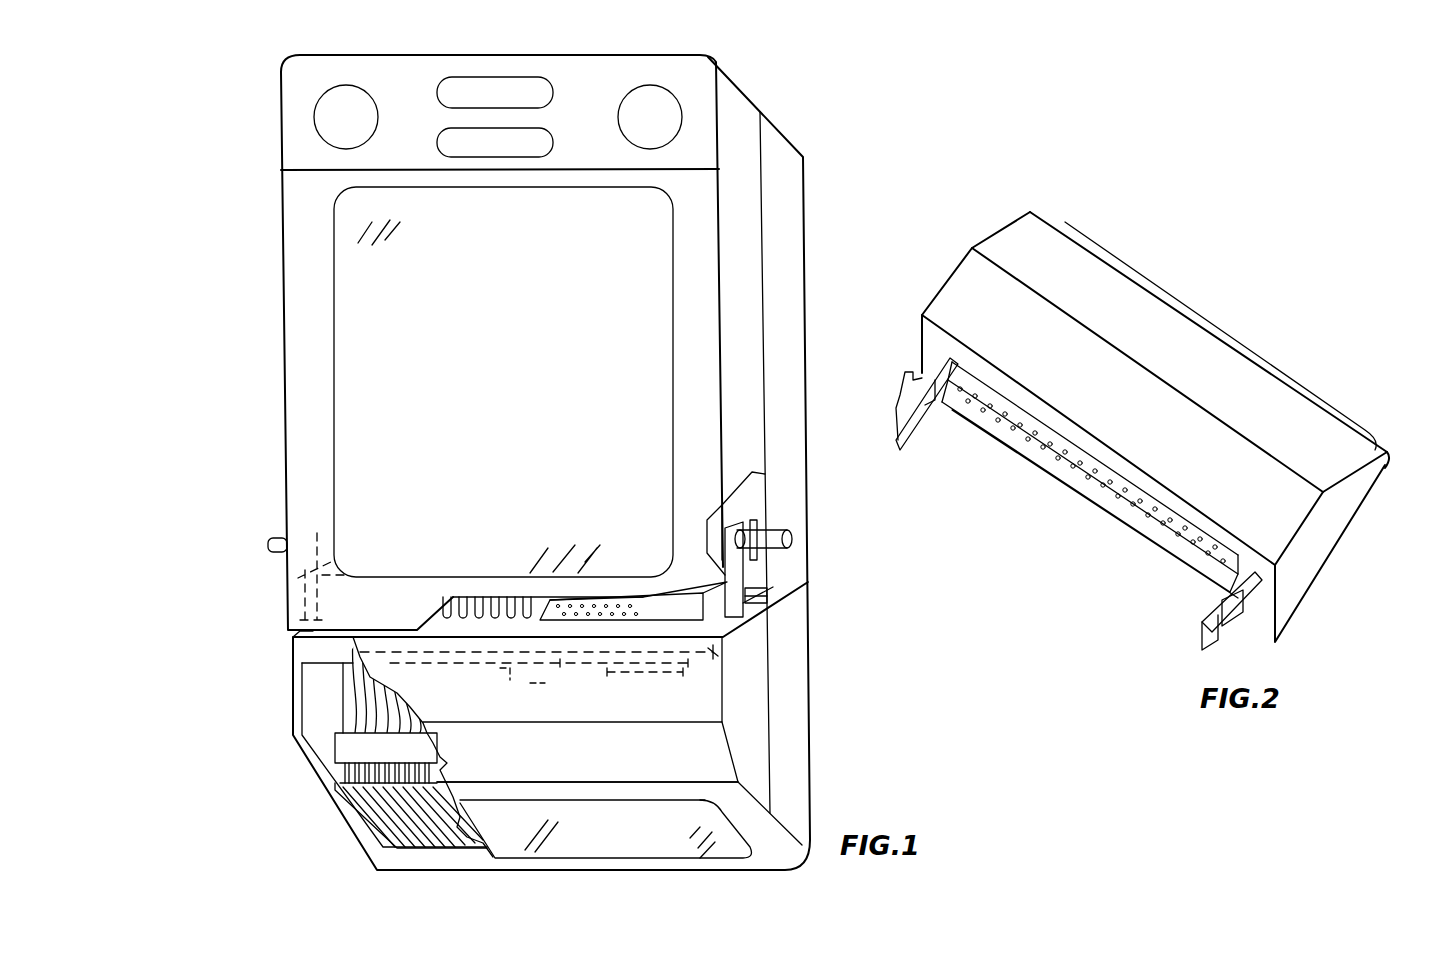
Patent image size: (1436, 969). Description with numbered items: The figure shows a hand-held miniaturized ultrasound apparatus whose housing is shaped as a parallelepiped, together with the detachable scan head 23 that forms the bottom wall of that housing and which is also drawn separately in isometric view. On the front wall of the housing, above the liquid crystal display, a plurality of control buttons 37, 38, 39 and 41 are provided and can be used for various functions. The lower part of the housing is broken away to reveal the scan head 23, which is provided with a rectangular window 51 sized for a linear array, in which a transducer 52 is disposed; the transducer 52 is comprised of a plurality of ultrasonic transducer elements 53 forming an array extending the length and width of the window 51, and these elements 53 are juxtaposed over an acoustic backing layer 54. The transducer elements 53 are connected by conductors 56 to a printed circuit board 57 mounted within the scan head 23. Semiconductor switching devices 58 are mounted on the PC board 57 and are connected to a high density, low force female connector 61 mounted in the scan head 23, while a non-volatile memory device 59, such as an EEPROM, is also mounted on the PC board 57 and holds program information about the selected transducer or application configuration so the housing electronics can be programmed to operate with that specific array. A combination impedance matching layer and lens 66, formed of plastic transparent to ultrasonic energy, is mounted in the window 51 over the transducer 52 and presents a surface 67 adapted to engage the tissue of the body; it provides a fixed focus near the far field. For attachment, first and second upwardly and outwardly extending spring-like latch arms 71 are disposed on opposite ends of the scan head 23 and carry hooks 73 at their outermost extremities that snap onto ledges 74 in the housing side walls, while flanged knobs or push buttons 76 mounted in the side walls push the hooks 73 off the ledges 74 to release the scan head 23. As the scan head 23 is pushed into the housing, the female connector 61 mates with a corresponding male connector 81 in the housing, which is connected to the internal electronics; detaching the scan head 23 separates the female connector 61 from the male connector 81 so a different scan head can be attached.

In FIG. 1, the detachable scan head 23 is at (258, 751).
In FIG. 1, the control button 37 is at (357, 108).
In FIG. 1, the control button 38 is at (673, 118).
In FIG. 1, the control button 39 is at (545, 142).
In FIG. 1, the control button 41 is at (533, 92).
In FIG. 1, the rectangular window 51 is at (673, 807).
In FIG. 1, the transducer 52 is at (325, 773).
In FIG. 1, the ultrasonic transducer elements 53 is at (373, 803).
In FIG. 1, the acoustic backing layer 54 is at (345, 748).
In FIG. 1, the conductors 56 is at (345, 705).
In FIG. 1, the printed circuit board 57 is at (313, 652).
In FIG. 1, the semiconductor switching devices 58 is at (505, 675).
In FIG. 1, the non-volatile memory device 59 is at (640, 677).
In FIG. 1, the female connector 61 is at (660, 605).
In FIG. 2, the female connector 61 is at (1062, 443).
In FIG. 1, the combination impedance matching layer and lens 66 is at (647, 837).
In FIG. 1, the surface 67 is at (480, 810).
In FIG. 2, the surface 67 is at (1337, 420).
In FIG. 1, the latch arms 71 is at (768, 594).
In FIG. 2, the latch arms 71 is at (925, 412).
In FIG. 1, the hooks 73 is at (737, 573).
In FIG. 2, the hooks 73 is at (915, 378).
In FIG. 1, the ledges 74 is at (757, 568).
In FIG. 1, the flanged knobs or push buttons 76 is at (792, 540).
In FIG. 1, the male connector 81 is at (478, 595).